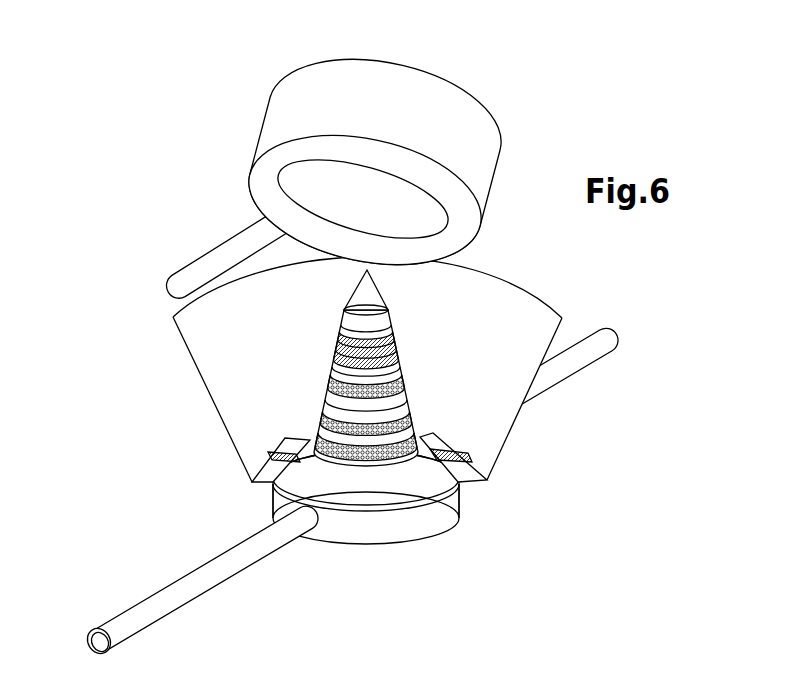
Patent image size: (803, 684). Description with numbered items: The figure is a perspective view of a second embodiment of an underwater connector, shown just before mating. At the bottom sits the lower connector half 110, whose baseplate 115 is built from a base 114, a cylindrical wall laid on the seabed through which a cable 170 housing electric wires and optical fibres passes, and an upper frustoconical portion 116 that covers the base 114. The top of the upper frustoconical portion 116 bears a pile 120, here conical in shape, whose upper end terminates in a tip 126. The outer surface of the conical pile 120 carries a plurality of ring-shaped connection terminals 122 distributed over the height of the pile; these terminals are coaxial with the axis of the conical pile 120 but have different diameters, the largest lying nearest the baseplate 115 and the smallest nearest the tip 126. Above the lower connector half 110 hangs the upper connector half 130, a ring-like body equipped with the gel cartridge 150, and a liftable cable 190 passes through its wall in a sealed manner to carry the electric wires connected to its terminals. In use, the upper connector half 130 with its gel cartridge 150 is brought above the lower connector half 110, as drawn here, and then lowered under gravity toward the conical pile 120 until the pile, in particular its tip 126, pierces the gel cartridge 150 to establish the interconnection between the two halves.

The lower connector half 110 is at (421, 512).
The base 114 is at (367, 533).
The baseplate 115 is at (442, 507).
The upper frustoconical portion 116 is at (421, 458).
The conical pile 120 is at (402, 368).
The ring-shaped connection terminals 122 is at (413, 432).
The tip 126 is at (373, 298).
The upper connector half 130 is at (356, 168).
The gel cartridge 150 is at (295, 185).
The cable 170 is at (180, 593).
The liftable cable 190 is at (210, 267).